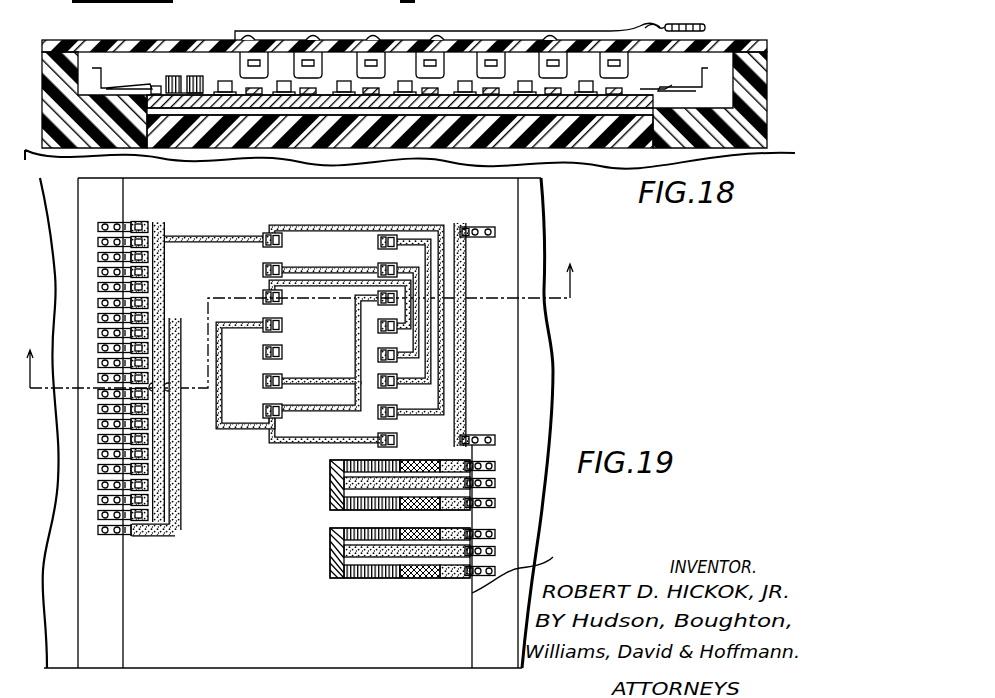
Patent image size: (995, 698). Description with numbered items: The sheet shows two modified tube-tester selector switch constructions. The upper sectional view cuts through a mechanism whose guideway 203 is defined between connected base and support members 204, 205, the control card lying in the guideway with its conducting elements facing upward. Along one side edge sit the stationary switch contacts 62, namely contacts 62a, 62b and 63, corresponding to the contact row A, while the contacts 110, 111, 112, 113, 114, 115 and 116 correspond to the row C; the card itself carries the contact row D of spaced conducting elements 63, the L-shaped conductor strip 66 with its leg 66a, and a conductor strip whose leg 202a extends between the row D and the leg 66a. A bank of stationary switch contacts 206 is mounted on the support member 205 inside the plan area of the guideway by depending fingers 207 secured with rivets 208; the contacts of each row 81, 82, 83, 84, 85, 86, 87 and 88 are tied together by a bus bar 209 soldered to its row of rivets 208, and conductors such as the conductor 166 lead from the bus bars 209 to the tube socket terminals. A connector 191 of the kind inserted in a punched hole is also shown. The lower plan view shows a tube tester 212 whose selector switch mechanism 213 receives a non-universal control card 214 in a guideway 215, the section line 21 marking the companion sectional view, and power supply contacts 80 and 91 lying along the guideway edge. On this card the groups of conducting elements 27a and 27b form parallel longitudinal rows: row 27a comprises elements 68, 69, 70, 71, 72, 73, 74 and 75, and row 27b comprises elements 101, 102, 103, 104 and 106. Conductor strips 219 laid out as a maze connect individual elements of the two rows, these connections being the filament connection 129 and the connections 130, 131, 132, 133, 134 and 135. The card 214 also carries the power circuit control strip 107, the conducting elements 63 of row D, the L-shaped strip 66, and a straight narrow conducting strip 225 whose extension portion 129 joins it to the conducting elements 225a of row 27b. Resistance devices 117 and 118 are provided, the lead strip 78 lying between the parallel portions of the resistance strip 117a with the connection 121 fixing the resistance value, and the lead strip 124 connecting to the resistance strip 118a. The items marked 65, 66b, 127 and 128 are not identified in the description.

In FIG. 19, the section line 21 is at (301, 319).
In FIG. 19, the contact row of conducting elements 27a is at (396, 441).
In FIG. 19, the contact row of conducting elements 27b is at (270, 427).
In FIG. 18, the stationary switch contacts 62 is at (125, 85).
In FIG. 19, the stationary switch contacts 62 is at (97, 470).
In FIG. 19, the stationary switch contact 62a is at (106, 224).
In FIG. 19, the stationary switch contact 62b is at (124, 560).
In FIG. 18, the conducting elements of contact row D 63 is at (158, 86).
In FIG. 19, the conducting elements of contact row D 63 is at (160, 449).
In FIG. 19, the terminal pad 65 is at (142, 225).
In FIG. 19, the L-shaped conductor strip 66 is at (182, 513).
In FIG. 18, the leg of conductor strip 66a is at (198, 108).
In FIG. 19, the leg of conductor strip 66a is at (178, 464).
In FIG. 19, the conductor leg 66b is at (156, 538).
In FIG. 19, the conducting element of contact row 68 is at (378, 242).
In FIG. 19, the conducting element of contact row 69 is at (397, 270).
In FIG. 19, the conducting element of contact row 70 is at (385, 305).
In FIG. 19, the conducting element of contact row 71 is at (385, 330).
In FIG. 19, the conducting element of contact row 72 is at (385, 358).
In FIG. 19, the conducting element of contact row 73 is at (384, 385).
In FIG. 18, the conducting element of contact row 74 is at (620, 100).
In FIG. 19, the conducting element of contact row 74 is at (380, 418).
In FIG. 19, the conducting element of contact row 75 is at (380, 442).
In FIG. 19, the lead strip 78 is at (360, 484).
In FIG. 18, the power supply contact 80 is at (700, 87).
In FIG. 19, the power supply contact 80 is at (466, 228).
In FIG. 19, the stationary switch contact row 81 is at (384, 250).
In FIG. 19, the stationary switch contact row 82 is at (396, 270).
In FIG. 19, the stationary switch contact row 83 is at (393, 305).
In FIG. 19, the stationary switch contact row 84 is at (397, 328).
In FIG. 19, the stationary switch contact row 85 is at (397, 360).
In FIG. 19, the stationary switch contact row 86 is at (398, 381).
In FIG. 18, the stationary switch contact row 87 is at (648, 89).
In FIG. 19, the stationary switch contact row 87 is at (397, 408).
In FIG. 19, the stationary switch contact row 88 is at (398, 437).
In FIG. 19, the power supply contact 91 is at (468, 436).
In FIG. 19, the conducting element of contact row 101 is at (262, 278).
In FIG. 19, the conducting element of contact row 102 is at (262, 304).
In FIG. 19, the conducting element of contact row 103 is at (301, 327).
In FIG. 19, the conducting element of contact row 104 is at (281, 359).
In FIG. 19, the conducting element of contact row 106 is at (282, 418).
In FIG. 18, the power circuit control strip 107 is at (640, 100).
In FIG. 19, the power circuit control strip 107 is at (466, 326).
In FIG. 18, the stationary switch contact 110 is at (228, 81).
In FIG. 19, the stationary switch contact 110 is at (276, 247).
In FIG. 18, the stationary switch contact 111 is at (285, 81).
In FIG. 19, the stationary switch contact 111 is at (276, 265).
In FIG. 18, the stationary switch contact 112 is at (345, 81).
In FIG. 19, the stationary switch contact 112 is at (279, 296).
In FIG. 18, the stationary switch contact 113 is at (405, 81).
In FIG. 19, the stationary switch contact 113 is at (277, 318).
In FIG. 18, the stationary switch contact 114 is at (466, 81).
In FIG. 19, the stationary switch contact 114 is at (280, 350).
In FIG. 18, the stationary switch contact 115 is at (525, 81).
In FIG. 19, the stationary switch contact 115 is at (280, 380).
In FIG. 18, the stationary switch contact 116 is at (586, 81).
In FIG. 19, the stationary switch contact 116 is at (281, 411).
In FIG. 19, the resistance device 117 is at (323, 482).
In FIG. 19, the resistance strip 117a is at (344, 505).
In FIG. 19, the resistance device 118 is at (322, 553).
In FIG. 19, the resistance strip 118a is at (344, 574).
In FIG. 19, the connection 121 is at (366, 468).
In FIG. 19, the lead strip 124 is at (372, 552).
In FIG. 18, the capacitor 127 is at (173, 76).
In FIG. 18, the capacitor 128 is at (196, 76).
In FIG. 19, the extension portion of conducting strip 129 is at (208, 236).
In FIG. 19, the connection 130 is at (340, 268).
In FIG. 19, the connection 131 is at (320, 290).
In FIG. 19, the connection 132 is at (322, 442).
In FIG. 19, the connection 133 is at (324, 412).
In FIG. 19, the connection 134 is at (316, 380).
In FIG. 19, the connection 135 is at (336, 327).
In FIG. 18, the conductor 166 is at (685, 24).
In FIG. 18, the connector 191 is at (198, 78).
In FIG. 18, the leg of conductor strip 202a is at (170, 108).
In FIG. 18, the guideway 203 is at (662, 135).
In FIG. 18, the base member 204 is at (767, 142).
In FIG. 18, the support member 205 is at (735, 40).
In FIG. 18, the stationary switch contacts 206 is at (598, 40).
In FIG. 18, the depending fingers 207 is at (490, 88).
In FIG. 18, the rivets 208 is at (651, 26).
In FIG. 18, the bus bar 209 is at (447, 34).
In FIG. 19, the tube tester 212 is at (552, 338).
In FIG. 19, the selector switch mechanism 213 is at (526, 233).
In FIG. 19, the control card 214 is at (300, 673).
In FIG. 19, the guideway 215 is at (529, 567).
In FIG. 19, the conductor strips 219 is at (438, 240).
In FIG. 19, the conducting strip 225 is at (164, 276).
In FIG. 19, the conducting elements of contact row 225a is at (266, 233).
In FIG. 18, the row of switch contacts A is at (125, 75).
In FIG. 19, the row of switch contacts A is at (91, 437).
In FIG. 18, the row of switch contacts C is at (291, 86).
In FIG. 19, the contact row D is at (150, 487).